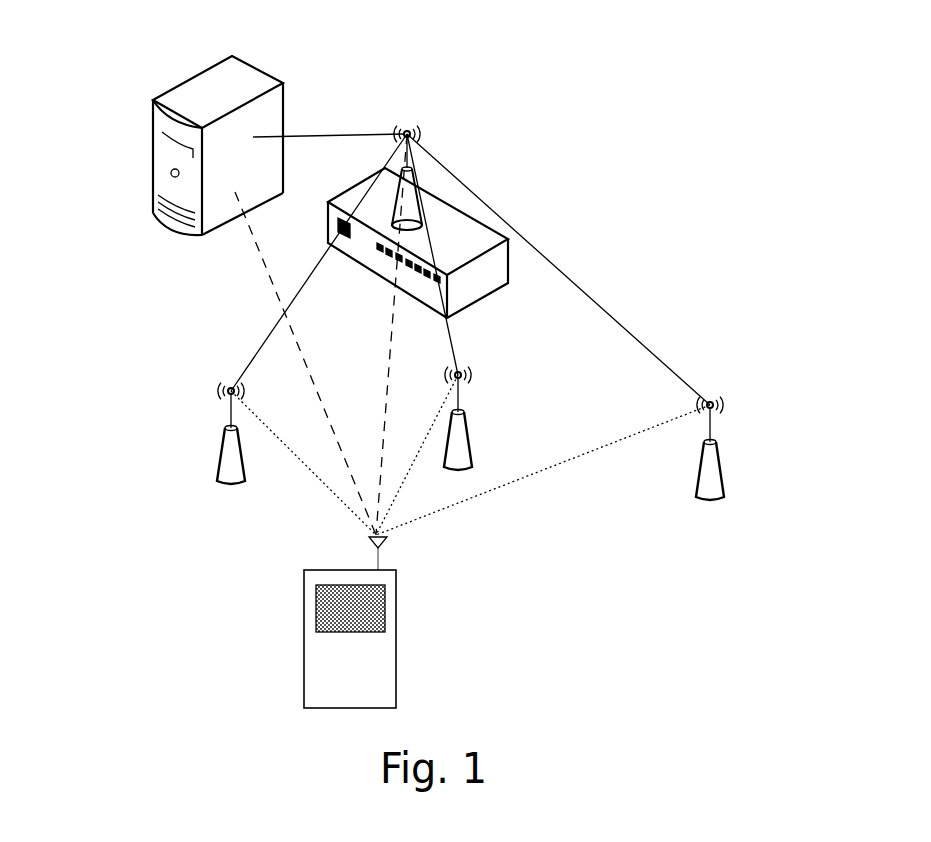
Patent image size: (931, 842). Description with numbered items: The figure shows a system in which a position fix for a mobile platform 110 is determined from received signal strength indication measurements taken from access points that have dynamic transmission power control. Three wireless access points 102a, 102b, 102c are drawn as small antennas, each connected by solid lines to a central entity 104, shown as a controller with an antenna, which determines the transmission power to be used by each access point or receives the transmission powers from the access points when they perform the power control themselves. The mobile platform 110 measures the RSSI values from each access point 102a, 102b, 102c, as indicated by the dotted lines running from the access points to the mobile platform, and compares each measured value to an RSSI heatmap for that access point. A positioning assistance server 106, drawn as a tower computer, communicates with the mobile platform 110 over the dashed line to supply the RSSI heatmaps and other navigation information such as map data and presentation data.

The positioning assistance server 106 is at (152, 145).
The central entity 104 is at (492, 228).
The wireless access point 102a is at (217, 465).
The wireless access point 102b is at (473, 448).
The wireless access point 102c is at (727, 492).
The mobile platform 110 is at (396, 655).